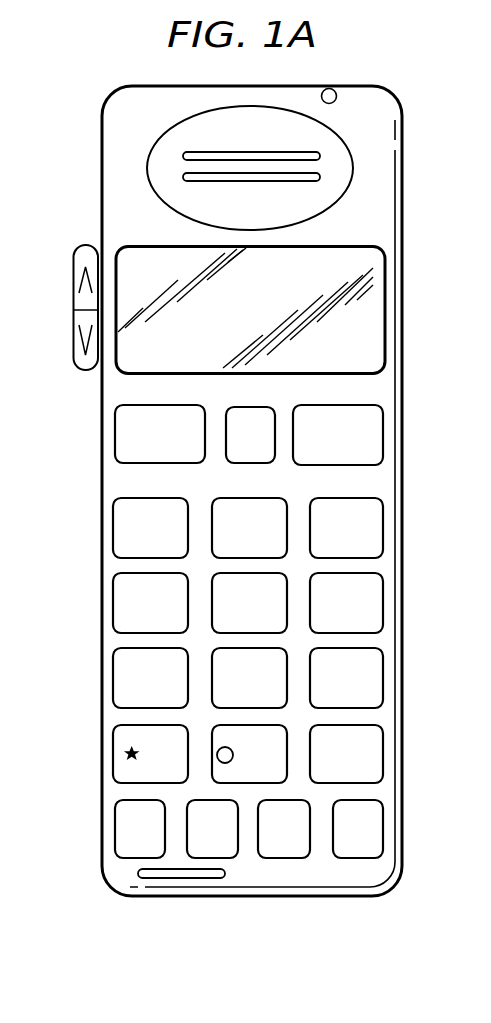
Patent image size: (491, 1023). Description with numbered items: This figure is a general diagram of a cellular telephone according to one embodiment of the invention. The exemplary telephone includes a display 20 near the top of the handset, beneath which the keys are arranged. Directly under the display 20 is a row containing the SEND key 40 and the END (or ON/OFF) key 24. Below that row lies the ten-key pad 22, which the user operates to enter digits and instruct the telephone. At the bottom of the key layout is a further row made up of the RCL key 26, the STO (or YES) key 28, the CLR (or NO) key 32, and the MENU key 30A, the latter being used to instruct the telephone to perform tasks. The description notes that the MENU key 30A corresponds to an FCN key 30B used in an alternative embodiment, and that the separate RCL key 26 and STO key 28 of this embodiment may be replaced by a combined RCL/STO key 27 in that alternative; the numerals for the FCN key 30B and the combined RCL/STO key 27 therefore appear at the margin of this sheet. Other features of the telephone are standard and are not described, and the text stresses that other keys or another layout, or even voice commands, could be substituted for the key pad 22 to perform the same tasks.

The display 20 is at (371, 311).
The ten-key pad 22 is at (410, 544).
The END key 24 is at (375, 432).
The RCL key 26 is at (127, 826).
The combined RCL/STO key 27 is at (490, 995).
The STO key 28 is at (213, 852).
The MENU key 30A is at (383, 825).
The FCN key 30B is at (490, 937).
The CLR key 32 is at (285, 853).
The SEND key 40 is at (117, 435).